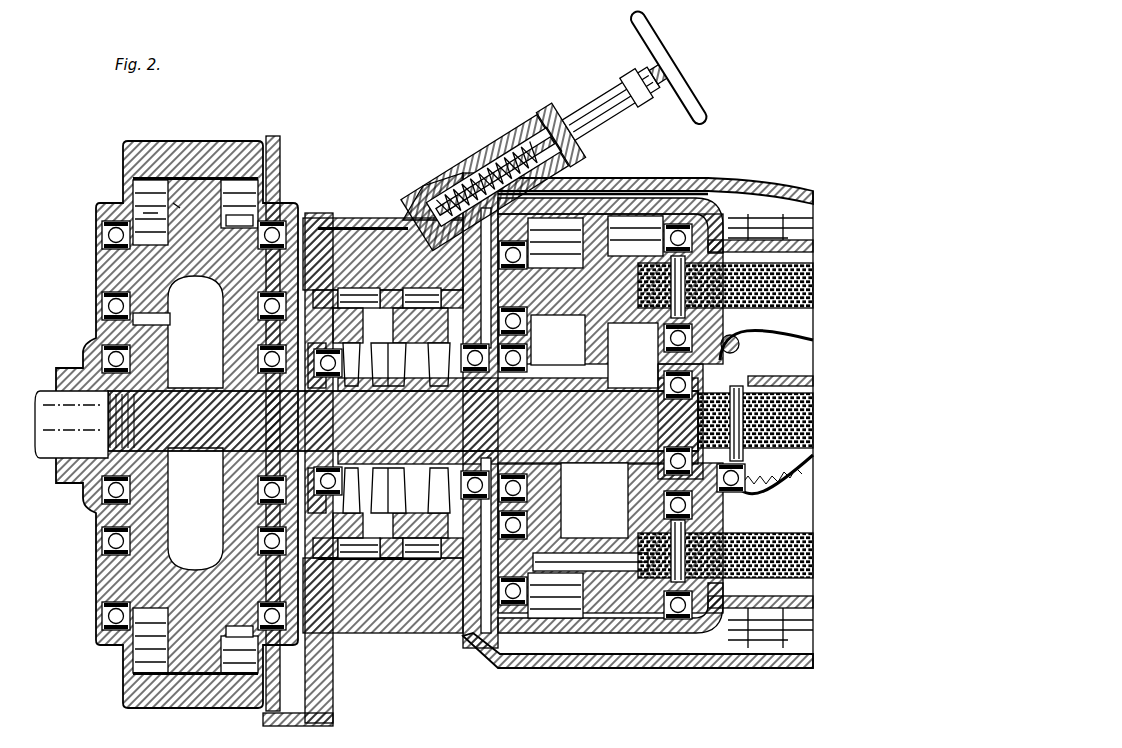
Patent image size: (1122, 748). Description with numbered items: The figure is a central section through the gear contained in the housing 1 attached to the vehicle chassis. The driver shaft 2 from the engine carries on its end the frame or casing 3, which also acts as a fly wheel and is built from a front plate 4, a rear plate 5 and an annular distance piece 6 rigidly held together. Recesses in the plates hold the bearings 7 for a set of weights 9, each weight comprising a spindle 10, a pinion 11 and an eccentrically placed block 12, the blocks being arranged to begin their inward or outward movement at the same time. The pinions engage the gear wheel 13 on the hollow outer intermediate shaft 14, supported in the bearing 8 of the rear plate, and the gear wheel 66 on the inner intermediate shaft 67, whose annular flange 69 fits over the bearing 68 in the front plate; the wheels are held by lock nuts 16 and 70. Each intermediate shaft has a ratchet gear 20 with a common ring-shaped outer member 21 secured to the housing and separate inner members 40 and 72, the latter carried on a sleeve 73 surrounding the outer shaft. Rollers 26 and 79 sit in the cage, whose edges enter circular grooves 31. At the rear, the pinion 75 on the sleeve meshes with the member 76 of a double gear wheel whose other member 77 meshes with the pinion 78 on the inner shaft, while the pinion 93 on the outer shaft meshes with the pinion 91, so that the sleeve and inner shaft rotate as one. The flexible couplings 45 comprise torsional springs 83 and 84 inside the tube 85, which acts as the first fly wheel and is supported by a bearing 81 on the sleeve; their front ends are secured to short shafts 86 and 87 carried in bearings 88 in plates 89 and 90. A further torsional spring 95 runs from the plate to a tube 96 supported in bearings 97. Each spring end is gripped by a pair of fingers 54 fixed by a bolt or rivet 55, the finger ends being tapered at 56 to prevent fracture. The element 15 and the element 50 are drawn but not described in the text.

The housing 1 is at (787, 178).
The driver shaft 2 is at (42, 455).
The frame or casing 3 is at (247, 115).
The front plate 4 is at (117, 170).
The rear plate 5 is at (273, 147).
The annular distance piece 6 is at (195, 160).
The bearings 7 is at (94, 213).
The bearing 8 is at (150, 505).
The set of weights 9 is at (168, 197).
The spindle 10 is at (120, 255).
The pinion 11 is at (227, 207).
The eccentrically placed block 12 is at (182, 187).
The gear wheel 13 is at (217, 322).
The outer intermediate shaft 14 is at (350, 207).
The housing wall 15 is at (473, 630).
The lock nut 16 is at (153, 455).
The ratchet gear 20 is at (380, 623).
The outer member 21 is at (382, 627).
The rollers 26 is at (330, 217).
The circular grooves 31 is at (332, 630).
The inner member 40 is at (355, 627).
The flexible couplings 45 is at (76, 745).
The bearing housing 50 is at (731, 217).
The fingers 54 is at (723, 230).
The bolt or rivet 55 is at (665, 195).
The tapered ends 56 is at (746, 478).
The gear wheel 66 is at (147, 312).
The inner intermediate shaft 67 is at (190, 408).
The bearing 68 is at (95, 340).
The annular flange 69 is at (94, 328).
The lock nut 70 is at (157, 487).
The inner member 72 is at (400, 623).
The sleeve 73 is at (562, 480).
The gear pinion 75 is at (537, 352).
The gear wheel member 76 is at (540, 657).
The pinion 77 is at (628, 647).
The pinion 78 is at (627, 355).
The rollers 79 is at (392, 205).
The bearing 81 is at (512, 135).
The torsional spring 83 is at (762, 230).
The torsional spring 84 is at (778, 600).
The tube 85 is at (752, 597).
The short shaft 86 is at (565, 195).
The short shaft 87 is at (573, 660).
The bearings 88 is at (498, 147).
The plate 89 is at (497, 667).
The plate 90 is at (702, 190).
The pinion 91 is at (600, 192).
The pinion 93 is at (600, 657).
The torsional spring 95 is at (790, 480).
The tube 96 is at (763, 483).
The bearings 97 is at (722, 350).